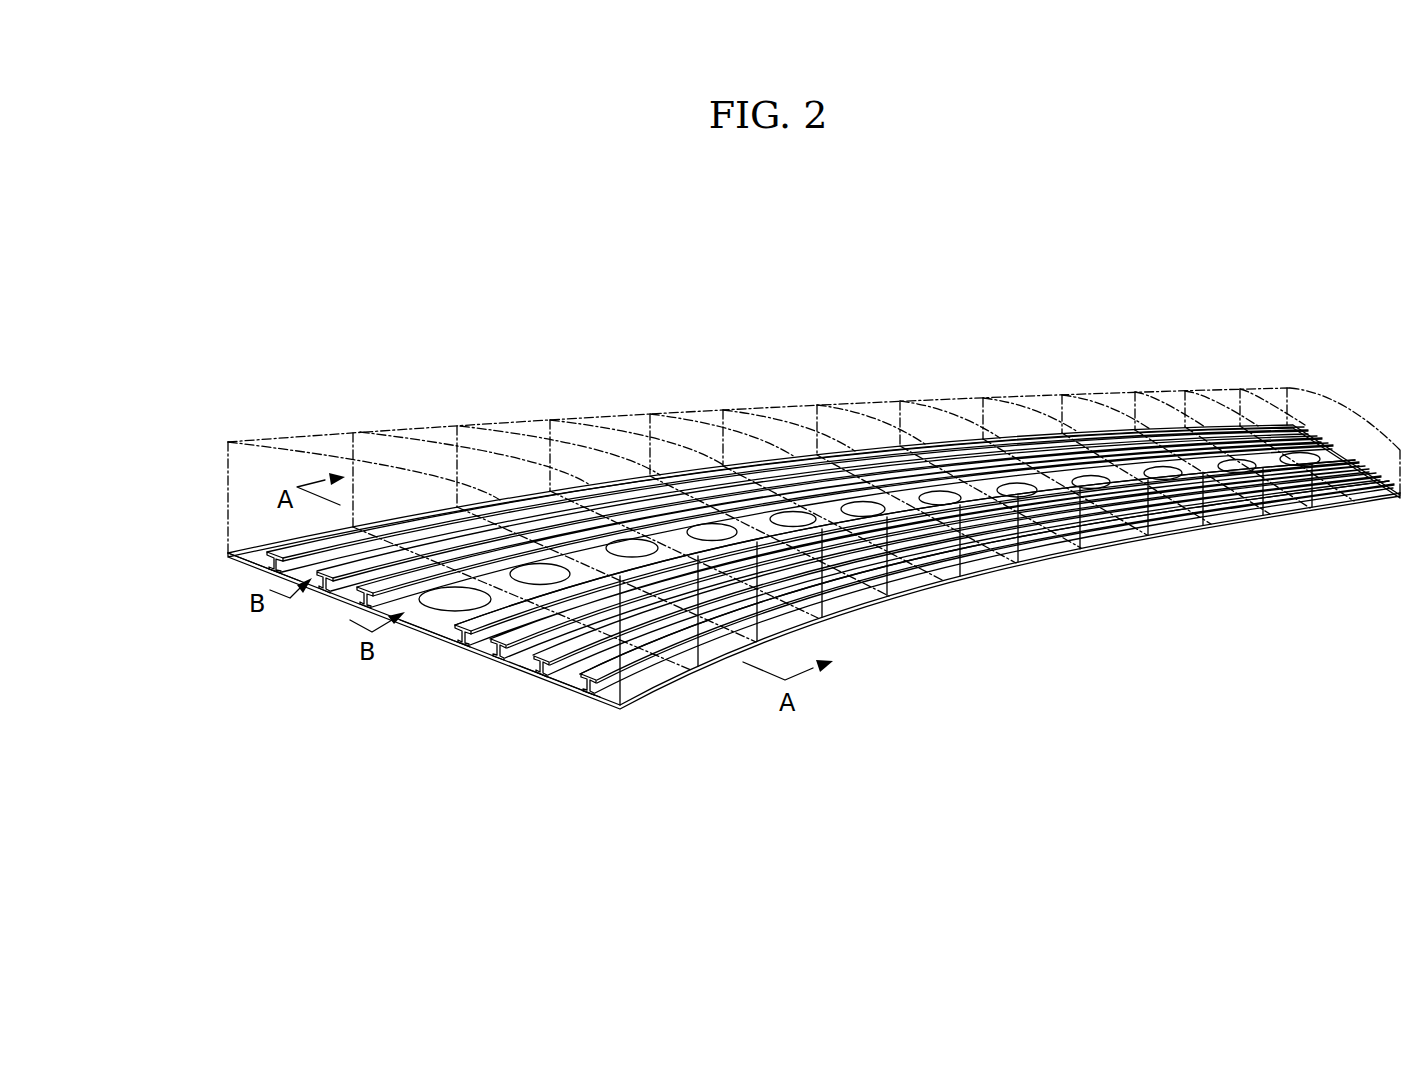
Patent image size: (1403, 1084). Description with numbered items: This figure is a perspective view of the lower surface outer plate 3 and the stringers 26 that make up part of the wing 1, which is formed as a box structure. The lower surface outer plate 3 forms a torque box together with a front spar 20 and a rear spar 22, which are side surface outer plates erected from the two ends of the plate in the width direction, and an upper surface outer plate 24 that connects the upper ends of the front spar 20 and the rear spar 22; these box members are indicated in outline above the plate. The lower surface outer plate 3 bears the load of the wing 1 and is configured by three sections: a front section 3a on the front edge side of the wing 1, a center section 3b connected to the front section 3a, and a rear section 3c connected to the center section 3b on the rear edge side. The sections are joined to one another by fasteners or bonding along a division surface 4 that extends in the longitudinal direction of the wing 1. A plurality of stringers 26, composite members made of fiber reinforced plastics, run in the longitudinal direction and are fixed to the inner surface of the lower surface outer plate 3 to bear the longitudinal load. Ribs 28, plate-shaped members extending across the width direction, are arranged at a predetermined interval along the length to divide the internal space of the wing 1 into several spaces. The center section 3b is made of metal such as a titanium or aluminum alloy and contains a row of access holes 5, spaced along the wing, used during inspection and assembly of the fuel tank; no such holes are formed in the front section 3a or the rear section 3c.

The wing 1 is at (683, 352).
The lower surface outer plate 3 is at (318, 724).
The front section 3a is at (240, 568).
The center section 3b is at (438, 650).
The rear section 3c is at (553, 684).
The division surface 4 is at (353, 607).
The access hole 5 is at (447, 600).
The front spar 20 is at (228, 470).
The rear spar 22 is at (672, 667).
The upper surface outer plate 24 is at (326, 440).
The stringer 26 is at (468, 625).
The rib 28 is at (409, 440).